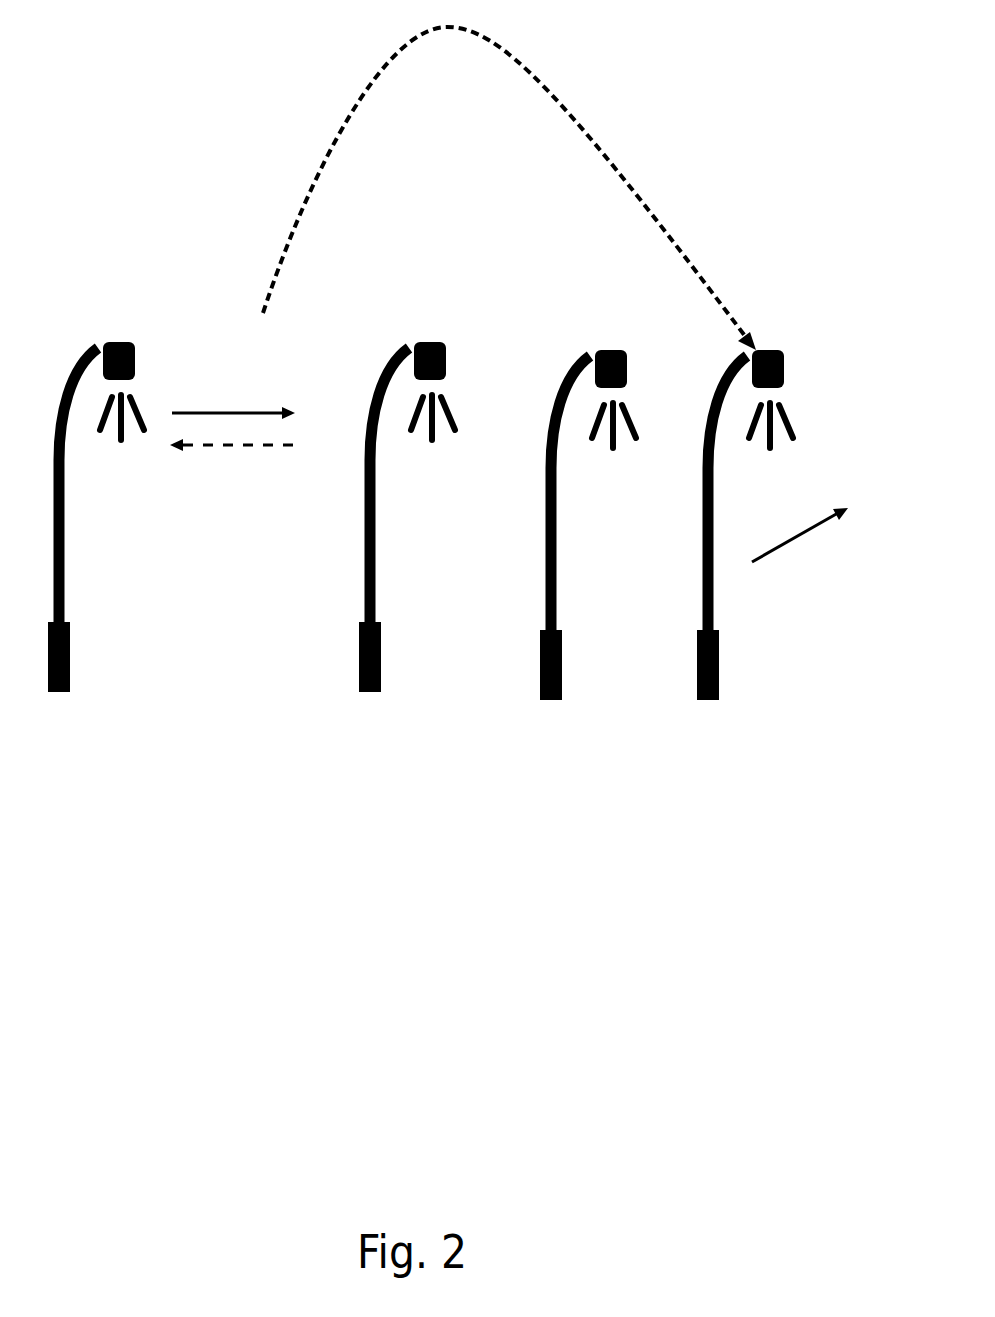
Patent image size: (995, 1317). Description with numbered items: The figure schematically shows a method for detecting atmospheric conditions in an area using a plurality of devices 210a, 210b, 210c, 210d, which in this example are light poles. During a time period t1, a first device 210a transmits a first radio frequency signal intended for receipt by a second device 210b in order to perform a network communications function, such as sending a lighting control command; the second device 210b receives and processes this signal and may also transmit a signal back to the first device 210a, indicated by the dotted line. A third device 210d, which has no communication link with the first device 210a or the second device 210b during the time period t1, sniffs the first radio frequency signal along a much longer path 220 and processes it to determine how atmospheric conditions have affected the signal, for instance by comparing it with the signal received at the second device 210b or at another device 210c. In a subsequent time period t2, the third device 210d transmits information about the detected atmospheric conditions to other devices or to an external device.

The first device 210a is at (125, 330).
The second device 210b is at (425, 328).
The another device 210c is at (595, 333).
The third device 210d is at (765, 333).
The path 220 is at (643, 128).
The time period t1 is at (208, 398).
The subsequent time period t2 is at (822, 550).